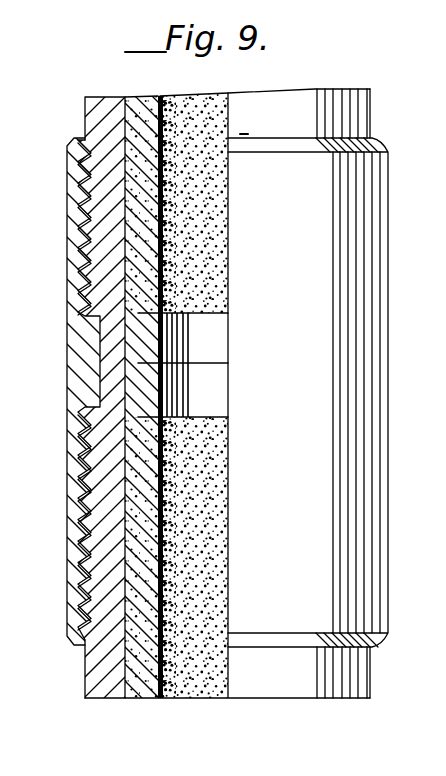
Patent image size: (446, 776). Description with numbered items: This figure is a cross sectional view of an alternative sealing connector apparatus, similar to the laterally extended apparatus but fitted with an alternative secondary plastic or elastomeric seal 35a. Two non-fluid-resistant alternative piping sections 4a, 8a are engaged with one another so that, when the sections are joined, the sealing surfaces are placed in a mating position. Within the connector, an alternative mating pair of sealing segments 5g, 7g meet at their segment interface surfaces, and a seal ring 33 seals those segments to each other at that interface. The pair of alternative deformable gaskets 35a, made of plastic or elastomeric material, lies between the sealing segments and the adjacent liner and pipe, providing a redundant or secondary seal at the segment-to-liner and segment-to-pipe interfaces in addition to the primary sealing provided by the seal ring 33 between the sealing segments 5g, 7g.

The alternative piping section 4a is at (85, 115).
The alternative piping section 8a is at (67, 414).
The secondary seal 35a is at (133, 226).
The sealing segment 5g is at (194, 203).
The sealing segment 7g is at (195, 557).
The seal ring 33 is at (128, 376).